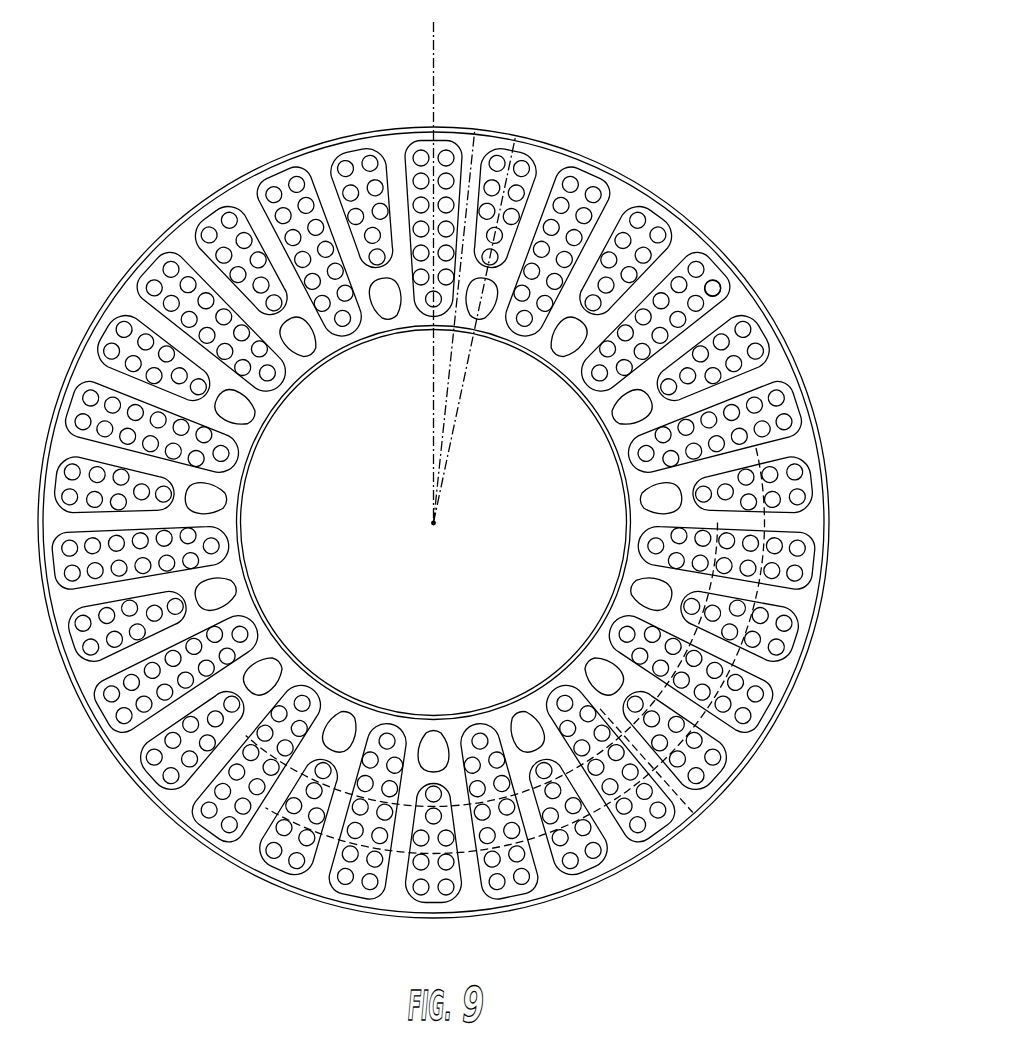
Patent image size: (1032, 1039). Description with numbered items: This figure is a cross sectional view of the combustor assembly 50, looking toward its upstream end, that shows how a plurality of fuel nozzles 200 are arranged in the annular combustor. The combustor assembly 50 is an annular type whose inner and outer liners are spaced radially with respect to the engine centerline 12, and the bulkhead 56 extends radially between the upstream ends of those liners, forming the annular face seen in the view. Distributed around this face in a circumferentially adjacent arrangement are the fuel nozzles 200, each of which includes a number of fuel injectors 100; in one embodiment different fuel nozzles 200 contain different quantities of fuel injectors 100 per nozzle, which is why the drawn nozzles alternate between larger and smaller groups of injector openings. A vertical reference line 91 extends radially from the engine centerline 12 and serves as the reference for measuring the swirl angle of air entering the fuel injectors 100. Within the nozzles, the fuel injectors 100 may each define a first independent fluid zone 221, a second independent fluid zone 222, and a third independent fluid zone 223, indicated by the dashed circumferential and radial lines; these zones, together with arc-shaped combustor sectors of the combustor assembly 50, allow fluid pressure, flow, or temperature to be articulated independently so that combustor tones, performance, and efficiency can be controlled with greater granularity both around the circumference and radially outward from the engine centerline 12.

The combustor assembly 50 is at (708, 130).
The bulkhead 56 is at (318, 168).
The vertical reference line 91 is at (434, 62).
The engine centerline 12 is at (434, 525).
The fuel nozzle 200 is at (707, 272).
The fuel injector 100 is at (716, 283).
The first independent fluid zone 221 is at (777, 452).
The second independent fluid zone 222 is at (747, 527).
The third independent fluid zone 223 is at (693, 812).